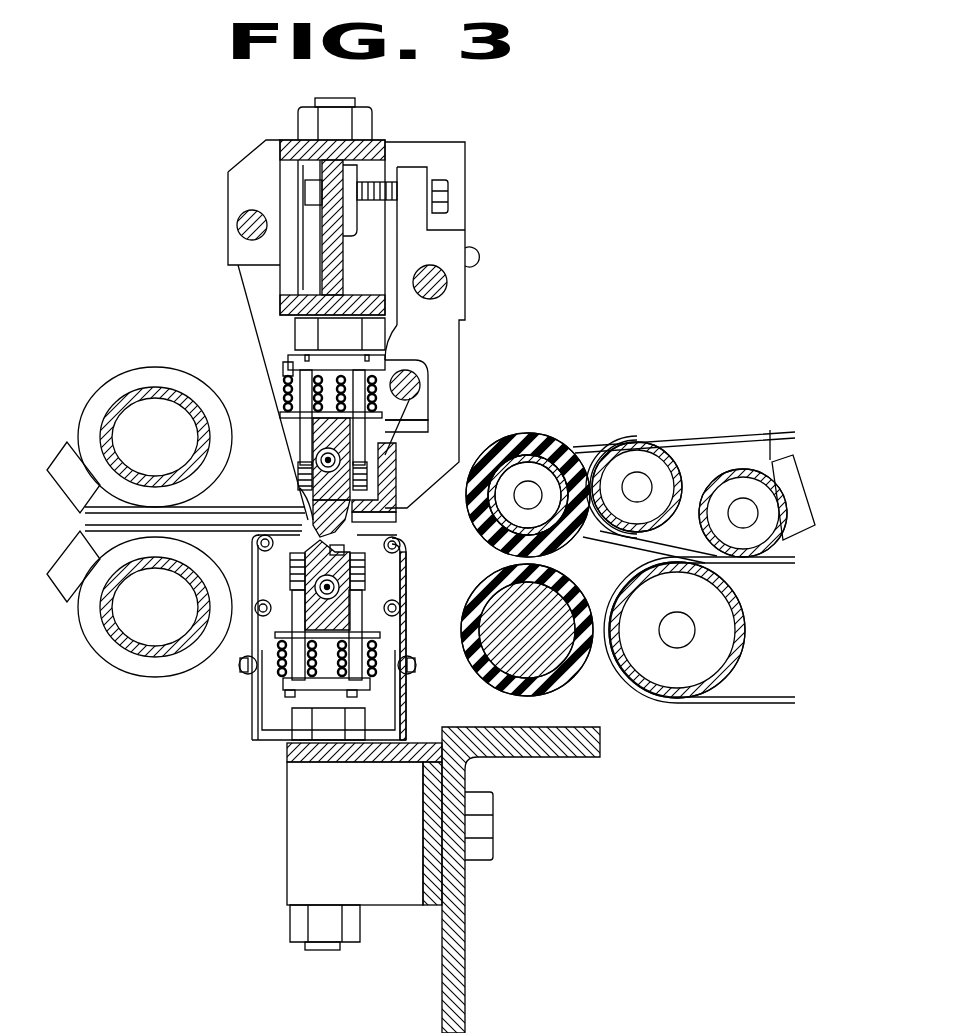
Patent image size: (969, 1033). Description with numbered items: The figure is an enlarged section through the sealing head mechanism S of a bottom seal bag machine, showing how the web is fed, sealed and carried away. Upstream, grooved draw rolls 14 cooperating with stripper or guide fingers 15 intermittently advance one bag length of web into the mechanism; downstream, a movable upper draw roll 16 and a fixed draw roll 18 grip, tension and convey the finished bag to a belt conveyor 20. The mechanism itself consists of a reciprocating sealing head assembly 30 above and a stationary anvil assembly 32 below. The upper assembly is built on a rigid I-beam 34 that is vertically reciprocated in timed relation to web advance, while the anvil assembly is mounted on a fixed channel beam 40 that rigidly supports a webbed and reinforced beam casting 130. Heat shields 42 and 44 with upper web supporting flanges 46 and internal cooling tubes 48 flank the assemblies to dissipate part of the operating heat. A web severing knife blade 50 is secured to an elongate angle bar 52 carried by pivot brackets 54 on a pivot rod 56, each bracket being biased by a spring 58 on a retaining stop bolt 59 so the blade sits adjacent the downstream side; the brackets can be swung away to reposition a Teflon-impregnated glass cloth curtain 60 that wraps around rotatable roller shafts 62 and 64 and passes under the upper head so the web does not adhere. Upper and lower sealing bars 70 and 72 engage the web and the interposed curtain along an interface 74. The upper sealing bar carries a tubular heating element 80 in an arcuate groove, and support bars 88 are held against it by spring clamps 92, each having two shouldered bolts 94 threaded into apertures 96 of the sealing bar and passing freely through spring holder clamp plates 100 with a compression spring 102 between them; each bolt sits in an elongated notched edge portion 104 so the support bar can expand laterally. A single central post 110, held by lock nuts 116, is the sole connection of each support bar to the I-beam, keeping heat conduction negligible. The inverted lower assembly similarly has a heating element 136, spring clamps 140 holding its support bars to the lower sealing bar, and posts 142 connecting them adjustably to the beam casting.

The sealing head mechanism S is at (505, 127).
The draw rolls 14 is at (95, 396).
The guide fingers 15 is at (92, 527).
The movable upper draw roll 16 is at (560, 443).
The fixed draw roll 18 is at (570, 683).
The belt conveyor 20 is at (785, 418).
The reciprocating sealing head assembly 30 is at (198, 364).
The stationary anvil assembly 32 is at (250, 690).
The I-beam 34 is at (380, 147).
The channel beam 40 is at (460, 886).
The heat shield 42 is at (252, 650).
The heat shield 44 is at (405, 640).
The web supporting flanges 46 is at (262, 536).
The cooling tubes 48 is at (265, 598).
The web severing knife blade 50 is at (368, 524).
The angle bar 52 is at (397, 503).
The pivot brackets 54 is at (455, 311).
The pivot rod 56 is at (447, 284).
The spring 58 is at (367, 184).
The retaining stop bolt 59 is at (445, 191).
The Teflon-impregnated glass cloth curtain 60 is at (228, 250).
The roller shaft 62 is at (256, 207).
The roller shaft 64 is at (412, 378).
The upper sealing bar 70 is at (312, 503).
The lower sealing bar 72 is at (362, 565).
The interface 74 is at (345, 550).
The heating element 80 is at (365, 458).
The support bars 88 is at (318, 458).
The spring clamp 92 is at (291, 368).
The shouldered bolts 94 is at (300, 440).
The threaded apertures 96 is at (300, 480).
The spring holder clamp plates 100 is at (386, 370).
The compression spring 102 is at (284, 385).
The notched edge portion 104 is at (290, 428).
The central post 110 is at (348, 98).
The lock nuts 116 is at (298, 118).
The beam casting 130 is at (380, 832).
The heating element 136 is at (340, 584).
The spring clamps 140 is at (370, 682).
The posts 142 is at (325, 951).